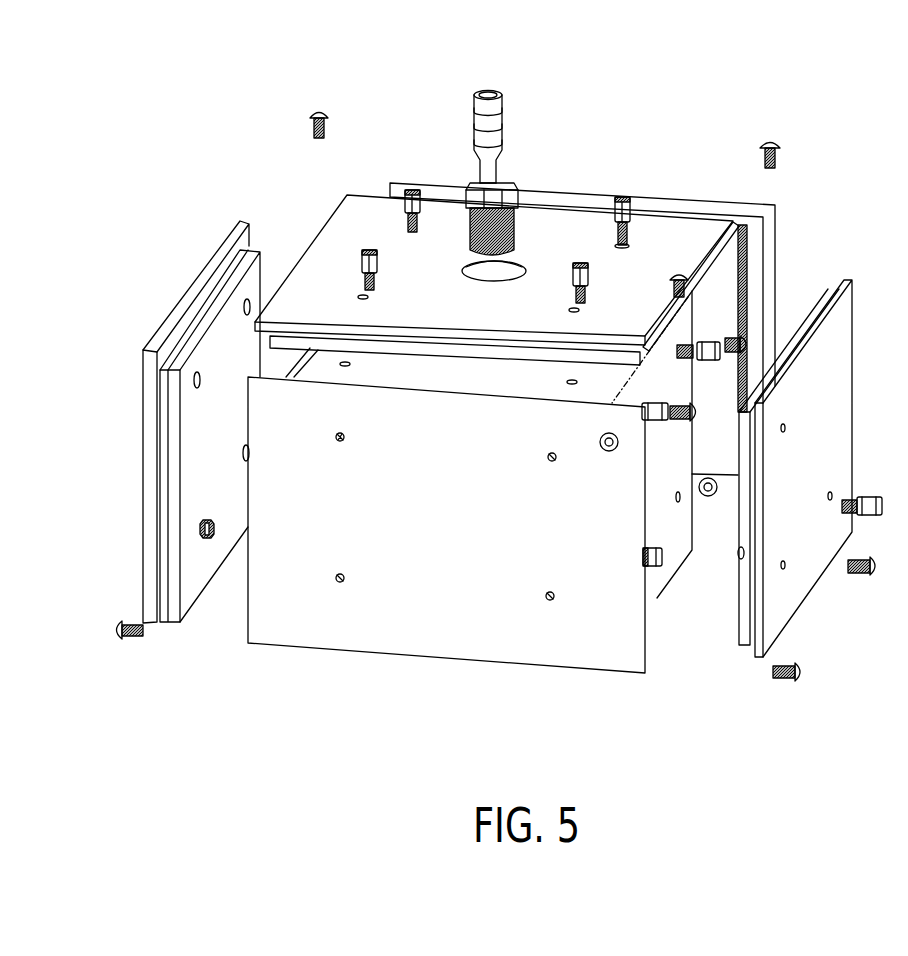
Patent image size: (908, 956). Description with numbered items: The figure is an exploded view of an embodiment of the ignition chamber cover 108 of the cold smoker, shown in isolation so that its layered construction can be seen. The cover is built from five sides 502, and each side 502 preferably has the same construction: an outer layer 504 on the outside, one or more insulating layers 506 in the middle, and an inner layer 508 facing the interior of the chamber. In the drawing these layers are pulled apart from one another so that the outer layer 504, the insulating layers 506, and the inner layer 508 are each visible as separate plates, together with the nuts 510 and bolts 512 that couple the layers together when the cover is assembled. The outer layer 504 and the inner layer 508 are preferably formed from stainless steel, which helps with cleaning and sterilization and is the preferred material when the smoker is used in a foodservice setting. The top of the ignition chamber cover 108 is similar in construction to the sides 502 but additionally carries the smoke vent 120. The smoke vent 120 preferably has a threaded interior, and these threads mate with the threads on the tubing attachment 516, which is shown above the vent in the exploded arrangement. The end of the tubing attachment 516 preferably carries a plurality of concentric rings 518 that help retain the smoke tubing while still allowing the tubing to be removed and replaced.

The ignition chamber cover 108 is at (200, 153).
The smoke vent 120 is at (523, 262).
The sides 502 is at (268, 219).
The outer layer 504 is at (141, 437).
The insulating layer 506 is at (198, 632).
The inner layer 508 is at (670, 557).
The nuts 510 is at (200, 529).
The bolts 512 is at (316, 112).
The tubing attachment 516 is at (515, 183).
The concentric rings 518 is at (478, 92).